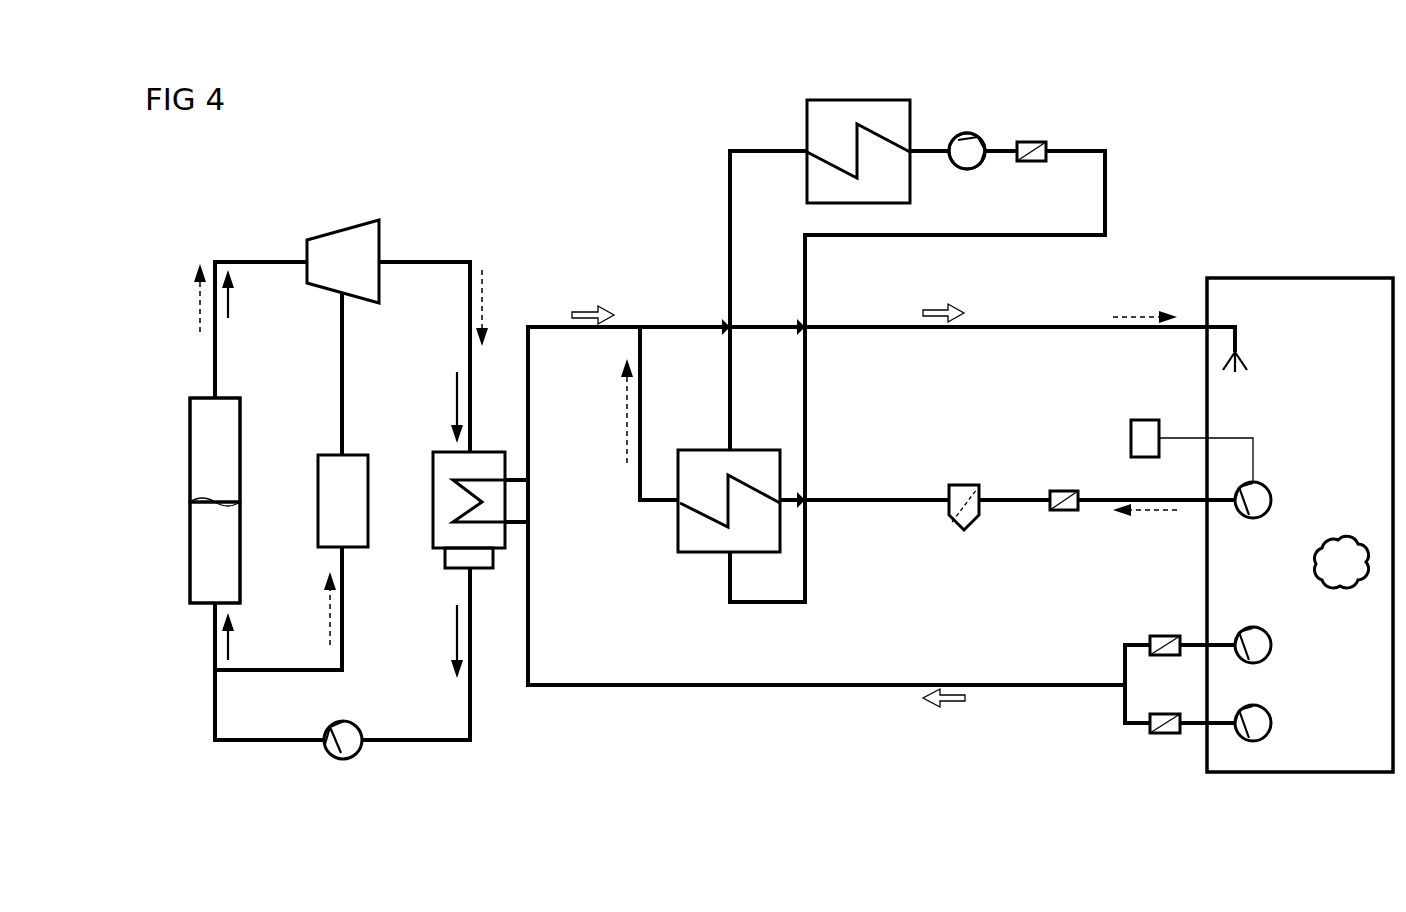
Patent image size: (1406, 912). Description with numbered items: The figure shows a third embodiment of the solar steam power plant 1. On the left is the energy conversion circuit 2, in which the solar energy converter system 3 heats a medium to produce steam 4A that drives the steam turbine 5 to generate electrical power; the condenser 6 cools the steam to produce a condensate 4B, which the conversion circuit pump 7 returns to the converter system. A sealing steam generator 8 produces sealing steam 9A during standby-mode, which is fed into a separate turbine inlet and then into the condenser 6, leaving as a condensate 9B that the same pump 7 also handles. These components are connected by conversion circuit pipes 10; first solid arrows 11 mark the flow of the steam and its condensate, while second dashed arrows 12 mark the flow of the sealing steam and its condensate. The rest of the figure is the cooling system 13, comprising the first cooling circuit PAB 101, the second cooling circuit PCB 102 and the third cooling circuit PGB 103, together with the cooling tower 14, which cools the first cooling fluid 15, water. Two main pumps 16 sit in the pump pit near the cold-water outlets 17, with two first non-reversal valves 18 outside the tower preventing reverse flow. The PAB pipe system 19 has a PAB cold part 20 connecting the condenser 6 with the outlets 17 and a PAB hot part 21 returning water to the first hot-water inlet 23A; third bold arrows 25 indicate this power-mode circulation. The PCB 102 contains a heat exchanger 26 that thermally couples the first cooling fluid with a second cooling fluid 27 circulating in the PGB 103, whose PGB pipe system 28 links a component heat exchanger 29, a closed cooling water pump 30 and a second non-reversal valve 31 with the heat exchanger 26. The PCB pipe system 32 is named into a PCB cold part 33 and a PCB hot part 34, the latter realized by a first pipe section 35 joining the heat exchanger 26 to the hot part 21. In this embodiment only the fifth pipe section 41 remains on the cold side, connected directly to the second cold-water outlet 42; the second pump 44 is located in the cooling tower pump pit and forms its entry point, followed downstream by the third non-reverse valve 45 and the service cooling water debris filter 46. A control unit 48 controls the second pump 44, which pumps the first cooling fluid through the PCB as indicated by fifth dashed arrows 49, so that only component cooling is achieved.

The solar steam power plant 1 is at (1309, 143).
The energy conversion circuit 2 is at (418, 196).
The solar energy converter system 3 is at (241, 548).
The steam 4A is at (214, 366).
The condensate 4B is at (200, 564).
The steam turbine 5 is at (340, 238).
The condenser 6 is at (433, 502).
The conversion circuit pump 7 is at (344, 760).
The sealing steam generator 8 is at (318, 502).
The sealing steam 9A is at (341, 394).
The condensate of the sealing steam 9B is at (280, 672).
The conversion circuit pipes 10 is at (264, 262).
The first arrows 11 is at (233, 307).
The second arrows 12 is at (200, 299).
The cooling system 13 is at (568, 775).
The cooling tower 14 is at (1301, 279).
The first cooling fluid 15 is at (1338, 540).
The main pumps 16 is at (1273, 648).
The cold-water outlets 17 is at (1210, 646).
The first non-reversal valves 18 is at (1168, 636).
The PAB pipe system 19 is at (766, 326).
The PAB cold part 20 is at (668, 714).
The PAB hot part 21 is at (1012, 312).
The first hot-water inlet 23A is at (1206, 326).
The third arrows 25 is at (586, 310).
The heat exchanger 26 is at (705, 554).
The second cooling fluid 27 is at (960, 152).
The PGB pipe system 28 is at (729, 232).
The component heat exchanger 29 is at (806, 131).
The closed cooling water pump 30 is at (965, 134).
The second non-reversal valve 31 is at (1029, 141).
The PCB pipe system 32 is at (913, 524).
The PCB cold part 33 is at (853, 524).
The PCB hot part 34 is at (655, 526).
The first pipe section 35 is at (641, 416).
The fifth pipe section 41 is at (1010, 504).
The second cold-water outlet 42 is at (1209, 498).
The second pump 44 is at (1128, 316).
The third non-reverse valve 45 is at (1064, 491).
The service cooling water debris filter 46 is at (965, 484).
The control unit 48 is at (1143, 420).
The fifth arrows 49 is at (626, 423).
The first cooling circuit (PAB) 101 is at (729, 714).
The second cooling circuit (PCB) 102 is at (621, 513).
The third cooling circuit (PGB) 103 is at (714, 144).